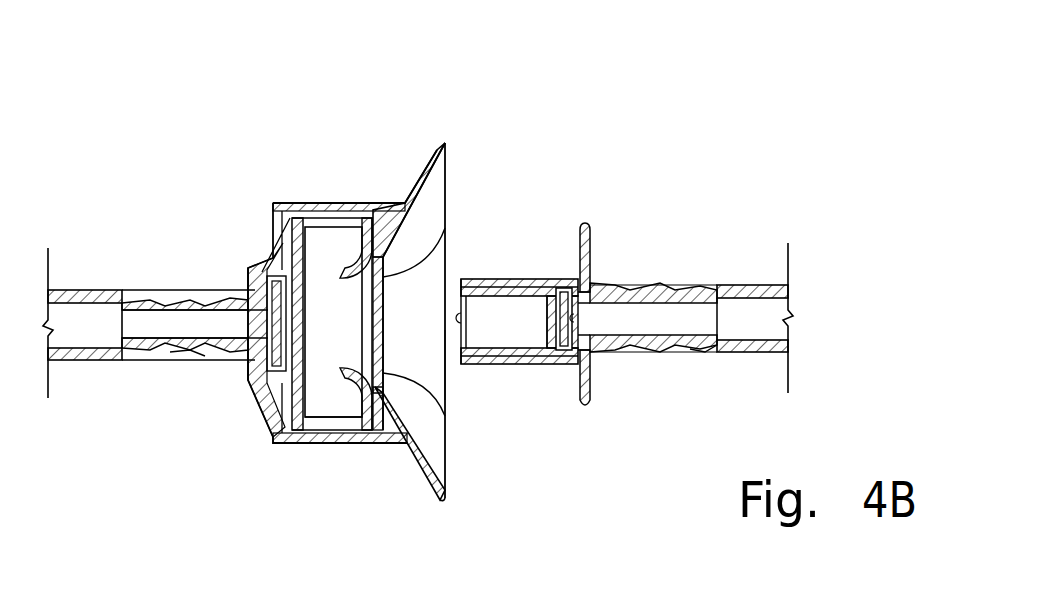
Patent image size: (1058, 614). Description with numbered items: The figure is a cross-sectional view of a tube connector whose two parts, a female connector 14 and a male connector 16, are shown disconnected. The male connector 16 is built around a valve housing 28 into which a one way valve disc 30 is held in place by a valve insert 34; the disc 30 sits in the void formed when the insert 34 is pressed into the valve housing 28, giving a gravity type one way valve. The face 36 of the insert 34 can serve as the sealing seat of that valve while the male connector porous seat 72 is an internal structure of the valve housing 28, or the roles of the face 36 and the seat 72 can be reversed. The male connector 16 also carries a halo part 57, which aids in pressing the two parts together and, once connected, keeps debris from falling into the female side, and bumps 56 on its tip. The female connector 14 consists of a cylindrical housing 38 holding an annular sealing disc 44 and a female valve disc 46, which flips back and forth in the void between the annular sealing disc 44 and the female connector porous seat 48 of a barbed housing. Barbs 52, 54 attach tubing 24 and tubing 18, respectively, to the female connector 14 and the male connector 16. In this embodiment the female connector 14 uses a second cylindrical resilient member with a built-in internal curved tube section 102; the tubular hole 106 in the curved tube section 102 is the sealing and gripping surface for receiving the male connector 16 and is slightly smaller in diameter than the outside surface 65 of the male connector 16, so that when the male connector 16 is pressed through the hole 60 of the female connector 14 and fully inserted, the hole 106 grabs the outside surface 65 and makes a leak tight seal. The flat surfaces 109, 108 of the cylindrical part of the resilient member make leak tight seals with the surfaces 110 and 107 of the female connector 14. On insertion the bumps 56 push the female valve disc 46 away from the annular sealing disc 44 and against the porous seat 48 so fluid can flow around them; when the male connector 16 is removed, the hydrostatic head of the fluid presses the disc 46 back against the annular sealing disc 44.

The female connector 14 is at (445, 122).
The male connector 16 is at (717, 122).
The tubing 18 is at (752, 285).
The tubing 24 is at (84, 295).
The valve housing 28 is at (542, 278).
The one way valve disc 30 is at (563, 278).
The valve insert 34 is at (513, 277).
The face of insert 36 is at (508, 352).
The cylindrical housing 38 is at (387, 200).
The annular sealing disc 44 is at (298, 247).
The female valve disc 46 is at (248, 360).
The female connector porous seat 48 is at (250, 283).
The barb 52 is at (185, 356).
The barb 54 is at (707, 352).
The bumps 56 is at (447, 375).
The halo part 57 is at (590, 373).
The hole 60 is at (445, 310).
The outside surface 65 is at (527, 362).
The male connector porous seat 72 is at (590, 277).
The curved tube section 102 is at (445, 223).
The tubular hole 106 is at (345, 316).
The surface of female connector 107 is at (357, 443).
The flat surface 108 is at (411, 469).
The flat surface 109 is at (378, 343).
The surface of female connector 110 is at (328, 222).